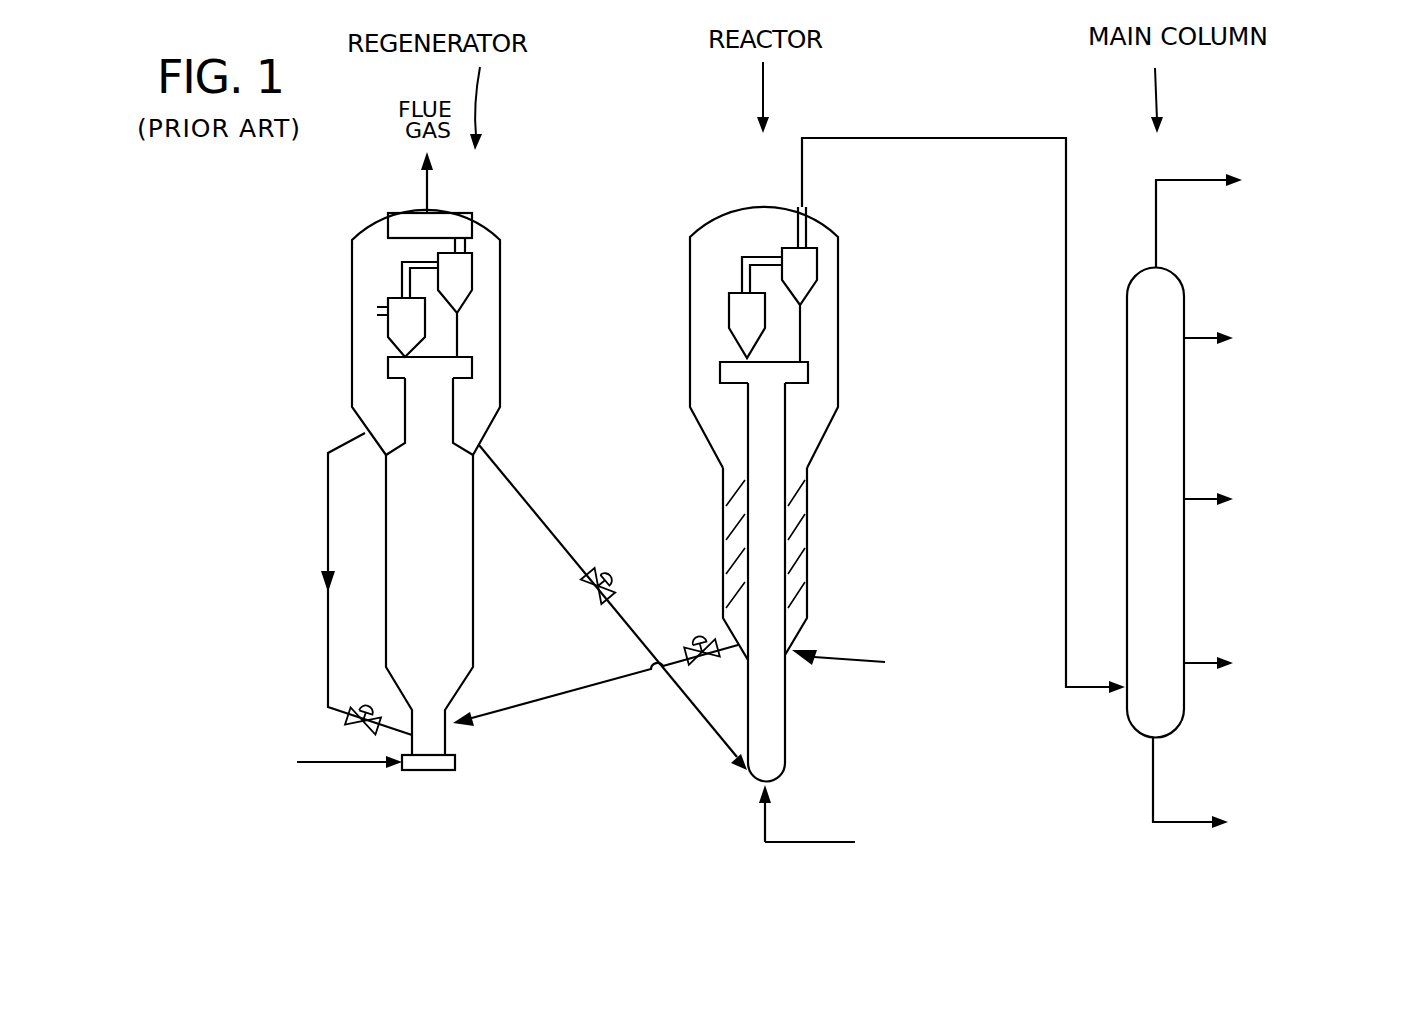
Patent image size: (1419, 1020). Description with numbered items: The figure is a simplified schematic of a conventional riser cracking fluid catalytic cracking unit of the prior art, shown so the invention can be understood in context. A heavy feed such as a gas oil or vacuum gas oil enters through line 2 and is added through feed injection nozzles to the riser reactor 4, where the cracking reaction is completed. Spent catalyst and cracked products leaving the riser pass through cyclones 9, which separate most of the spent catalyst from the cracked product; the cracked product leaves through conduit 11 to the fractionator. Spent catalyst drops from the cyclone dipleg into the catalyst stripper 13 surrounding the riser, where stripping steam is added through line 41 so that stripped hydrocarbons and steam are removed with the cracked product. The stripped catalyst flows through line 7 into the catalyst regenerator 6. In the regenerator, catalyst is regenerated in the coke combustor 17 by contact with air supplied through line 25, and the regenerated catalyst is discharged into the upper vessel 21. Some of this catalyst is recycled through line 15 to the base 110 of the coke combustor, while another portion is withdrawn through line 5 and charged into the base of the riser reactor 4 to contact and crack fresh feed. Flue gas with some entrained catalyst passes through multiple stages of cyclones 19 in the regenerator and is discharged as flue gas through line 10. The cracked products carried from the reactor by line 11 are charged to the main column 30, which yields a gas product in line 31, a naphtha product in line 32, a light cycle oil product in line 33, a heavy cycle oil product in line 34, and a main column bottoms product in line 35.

The feed line 2 is at (793, 840).
The riser reactor 4 is at (787, 743).
The regenerated catalyst line 5 is at (702, 712).
The catalyst regenerator 6 is at (428, 303).
The stripped catalyst line 7 is at (518, 703).
The cyclones 9 is at (730, 297).
The flue gas line 10 is at (427, 203).
The cracked product conduit 11 is at (963, 140).
The catalyst stripper 13 is at (811, 538).
The catalyst recycle line 15 is at (325, 512).
The coke combustor 17 is at (475, 603).
The regenerator cyclones 19 is at (400, 275).
The upper vessel 21 is at (503, 358).
The air line 25 is at (347, 763).
The main column 30 is at (1187, 411).
The gas product line 31 is at (1188, 180).
The naphtha product line 32 is at (1193, 340).
The light cycle oil product line 33 is at (1193, 502).
The heavy cycle oil product line 34 is at (1193, 665).
The main column bottoms product line 35 is at (1193, 825).
The stripping steam line 41 is at (820, 658).
The base of the coke combustor 110 is at (447, 744).